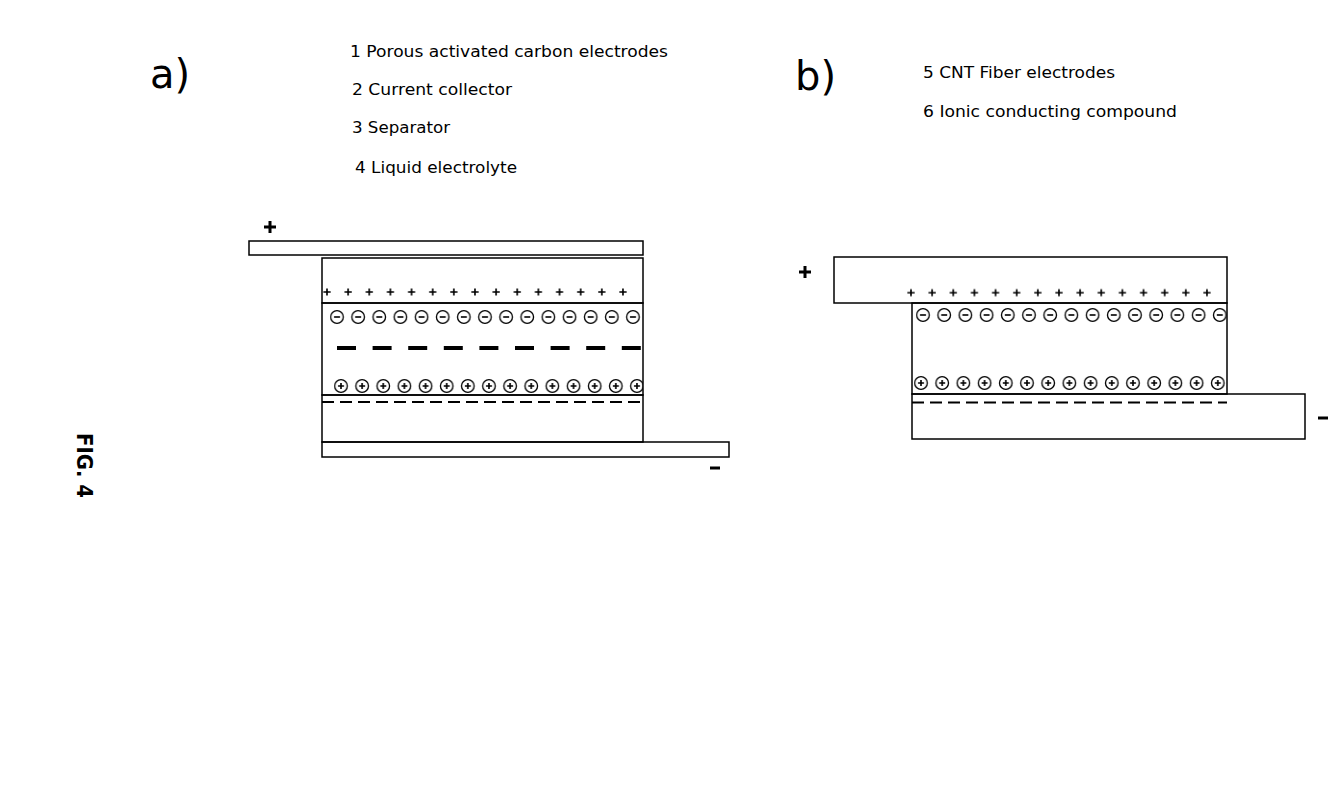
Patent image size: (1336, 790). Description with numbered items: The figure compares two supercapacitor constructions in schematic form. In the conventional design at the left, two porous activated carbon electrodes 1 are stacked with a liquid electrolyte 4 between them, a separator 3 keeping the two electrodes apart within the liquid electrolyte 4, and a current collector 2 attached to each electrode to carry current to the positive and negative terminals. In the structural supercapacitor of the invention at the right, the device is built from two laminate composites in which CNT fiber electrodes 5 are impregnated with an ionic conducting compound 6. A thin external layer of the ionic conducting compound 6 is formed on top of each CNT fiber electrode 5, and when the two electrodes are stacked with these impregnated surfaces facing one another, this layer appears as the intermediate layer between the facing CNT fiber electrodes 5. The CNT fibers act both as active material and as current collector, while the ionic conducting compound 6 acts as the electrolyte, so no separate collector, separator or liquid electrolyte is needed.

The porous activated carbon electrodes 1 is at (342, 418).
The current collector 2 is at (340, 448).
The separator 3 is at (632, 345).
The liquid electrolyte 4 is at (592, 367).
The CNT fiber electrodes 5 is at (912, 415).
The ionic conducting compound 6 is at (1197, 353).